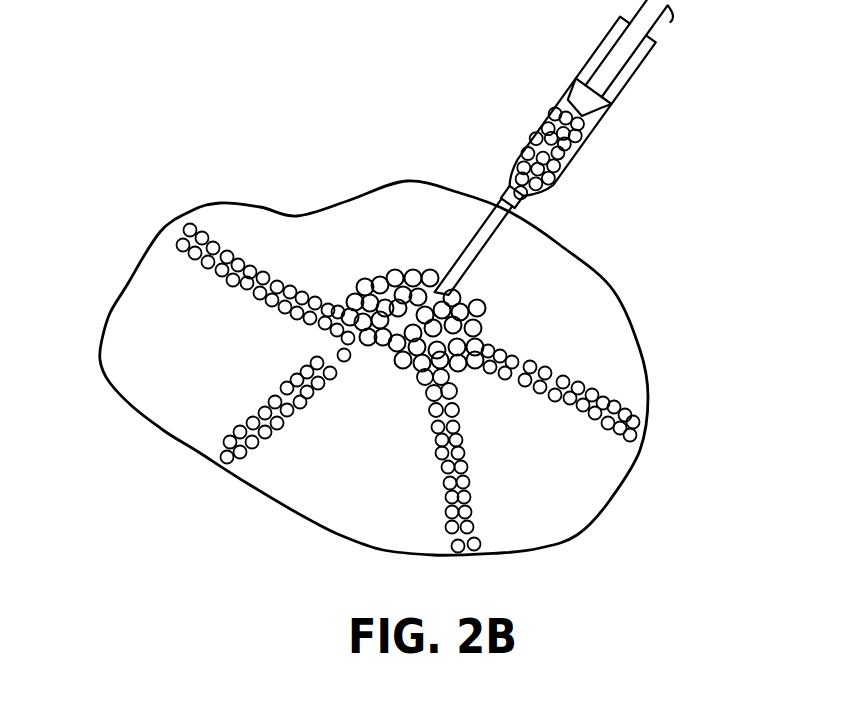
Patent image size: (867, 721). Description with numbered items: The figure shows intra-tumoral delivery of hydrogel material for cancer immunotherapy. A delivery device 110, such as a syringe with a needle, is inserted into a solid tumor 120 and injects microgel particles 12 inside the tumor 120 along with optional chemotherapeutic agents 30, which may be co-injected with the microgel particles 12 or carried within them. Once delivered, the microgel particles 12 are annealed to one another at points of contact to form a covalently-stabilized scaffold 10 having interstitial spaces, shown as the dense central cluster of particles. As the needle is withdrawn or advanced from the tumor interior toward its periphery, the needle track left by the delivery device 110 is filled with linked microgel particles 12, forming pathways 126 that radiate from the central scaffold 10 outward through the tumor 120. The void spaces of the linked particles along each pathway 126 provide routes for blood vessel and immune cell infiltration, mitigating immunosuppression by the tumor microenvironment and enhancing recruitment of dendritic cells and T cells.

The scaffold 10 is at (439, 295).
The microgel particles 12 is at (352, 300).
The chemotherapeutic agents 30 is at (573, 162).
The delivery device 110 is at (537, 118).
The tumor 120 is at (613, 290).
The pathways 126 is at (236, 262).